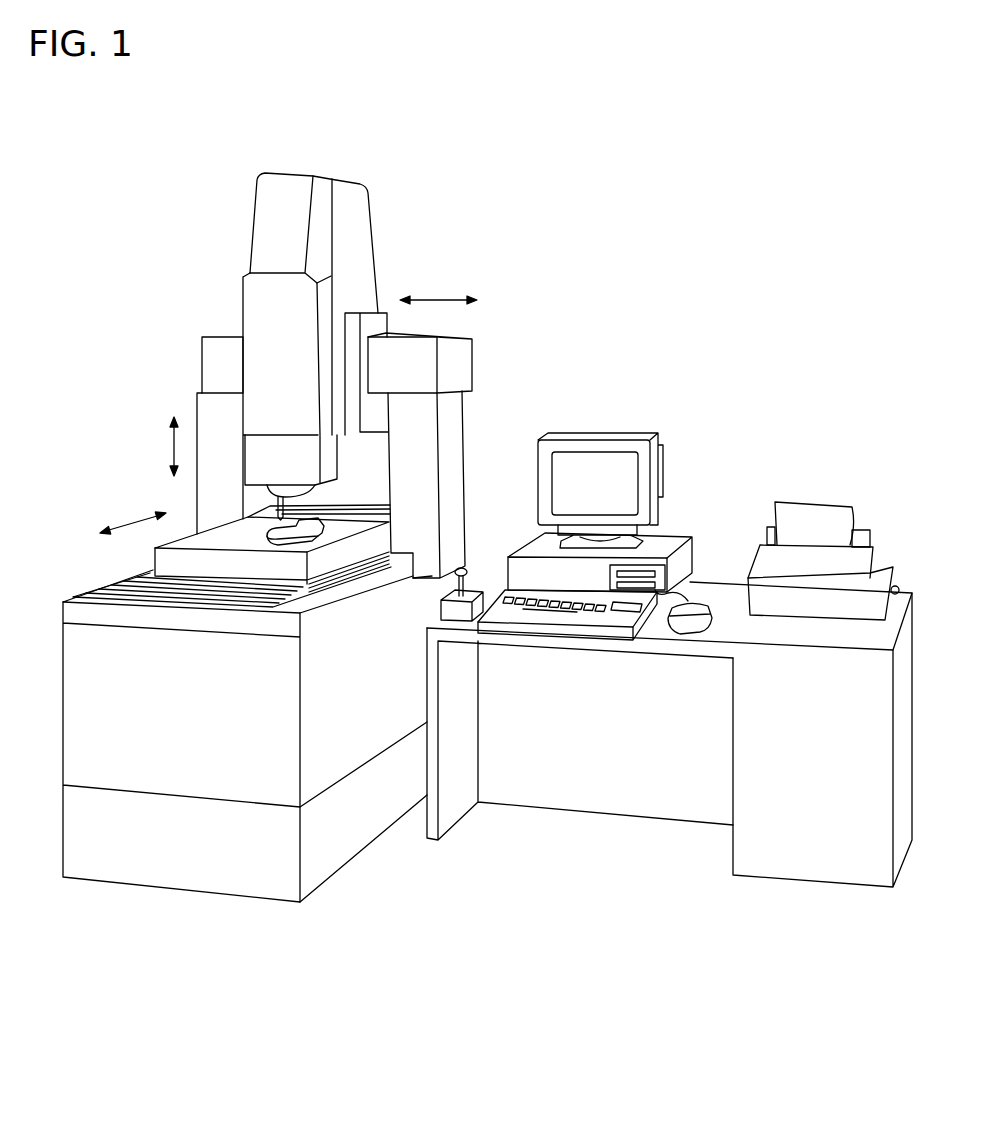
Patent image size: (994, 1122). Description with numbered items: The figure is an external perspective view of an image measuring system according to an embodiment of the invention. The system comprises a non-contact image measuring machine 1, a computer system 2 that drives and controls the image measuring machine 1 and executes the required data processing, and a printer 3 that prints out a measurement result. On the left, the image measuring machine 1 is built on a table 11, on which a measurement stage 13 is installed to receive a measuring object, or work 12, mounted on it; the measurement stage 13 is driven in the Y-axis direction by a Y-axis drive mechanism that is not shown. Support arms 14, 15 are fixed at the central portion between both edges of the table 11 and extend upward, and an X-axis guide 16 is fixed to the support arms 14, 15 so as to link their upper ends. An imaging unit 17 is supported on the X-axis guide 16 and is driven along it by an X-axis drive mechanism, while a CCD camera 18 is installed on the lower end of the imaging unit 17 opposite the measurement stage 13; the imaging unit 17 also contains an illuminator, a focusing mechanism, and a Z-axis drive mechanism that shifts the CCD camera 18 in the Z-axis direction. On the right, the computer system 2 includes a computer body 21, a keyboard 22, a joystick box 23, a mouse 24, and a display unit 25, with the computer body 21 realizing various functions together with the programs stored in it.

The image measuring machine 1 is at (398, 206).
The computer system 2 is at (672, 425).
The printer 3 is at (839, 483).
The table 11 is at (113, 582).
The measuring object (work) 12 is at (297, 537).
The measurement stage 13 is at (239, 529).
The support arm 14 is at (197, 413).
The support arm 15 is at (452, 448).
The X-axis guide 16 is at (221, 337).
The imaging unit 17 is at (254, 215).
The CCD camera 18 is at (295, 502).
The computer body 21 is at (667, 537).
The keyboard 22 is at (583, 616).
The joystick box (J/S) 23 is at (456, 603).
The mouse 24 is at (681, 620).
The display unit 25 is at (653, 478).